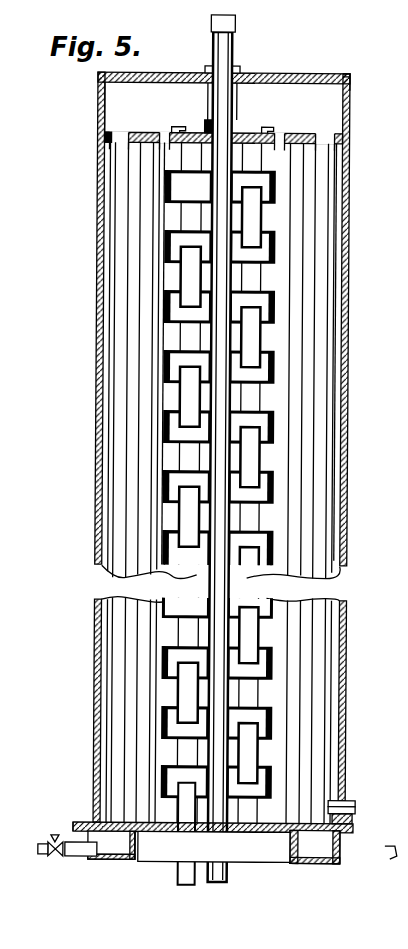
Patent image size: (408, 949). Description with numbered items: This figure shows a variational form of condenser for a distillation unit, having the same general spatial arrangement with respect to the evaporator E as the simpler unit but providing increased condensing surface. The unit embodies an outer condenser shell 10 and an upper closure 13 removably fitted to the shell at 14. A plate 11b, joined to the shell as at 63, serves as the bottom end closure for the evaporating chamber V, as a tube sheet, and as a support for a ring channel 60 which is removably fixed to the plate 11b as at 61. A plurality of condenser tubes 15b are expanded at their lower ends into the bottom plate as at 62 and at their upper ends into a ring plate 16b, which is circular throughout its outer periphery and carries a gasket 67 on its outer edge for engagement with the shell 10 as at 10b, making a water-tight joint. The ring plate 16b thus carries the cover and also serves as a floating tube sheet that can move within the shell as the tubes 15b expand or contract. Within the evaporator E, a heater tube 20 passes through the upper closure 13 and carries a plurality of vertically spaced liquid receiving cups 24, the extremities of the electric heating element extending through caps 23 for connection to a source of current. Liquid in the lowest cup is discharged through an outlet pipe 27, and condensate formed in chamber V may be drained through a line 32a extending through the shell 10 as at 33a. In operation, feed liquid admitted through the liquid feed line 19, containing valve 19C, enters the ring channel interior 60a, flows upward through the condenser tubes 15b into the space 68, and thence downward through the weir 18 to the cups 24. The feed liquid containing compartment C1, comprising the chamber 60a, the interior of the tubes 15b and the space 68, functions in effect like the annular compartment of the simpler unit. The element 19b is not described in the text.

The cap 23 is at (236, 24).
The space 68 is at (250, 98).
The upper end closure 13 is at (293, 75).
The fitting of upper closure to shell 14 is at (352, 79).
The ring plate 16b is at (152, 120).
The gasket 67 is at (106, 145).
The weir 18 is at (253, 133).
The engagement of gasket with shell 10b is at (350, 141).
The condenser tubes 15b is at (262, 292).
The liquid receiving cups 24 is at (168, 362).
The condenser shell 10 is at (348, 385).
The heater tube 20 is at (229, 407).
The evaporator E is at (331, 470).
The evaporating chamber V is at (166, 212).
The feed liquid containing compartment C1 is at (125, 97).
The expanded lower ends of condenser tubes 62 is at (97, 808).
The joint of plate to shell 63 is at (83, 826).
The passage of drain line through shell 33a is at (336, 800).
The drain line 32a is at (350, 806).
The fixing of ring channel to plate 61 is at (148, 838).
The outlet fitting 19b is at (402, 856).
The liquid feed line 19 is at (80, 850).
The valve 19C is at (60, 860).
The ring channel interior 60a is at (112, 863).
The ring channel 60 is at (137, 862).
The outlet pipe 27 is at (181, 877).
The plate 11b is at (284, 833).